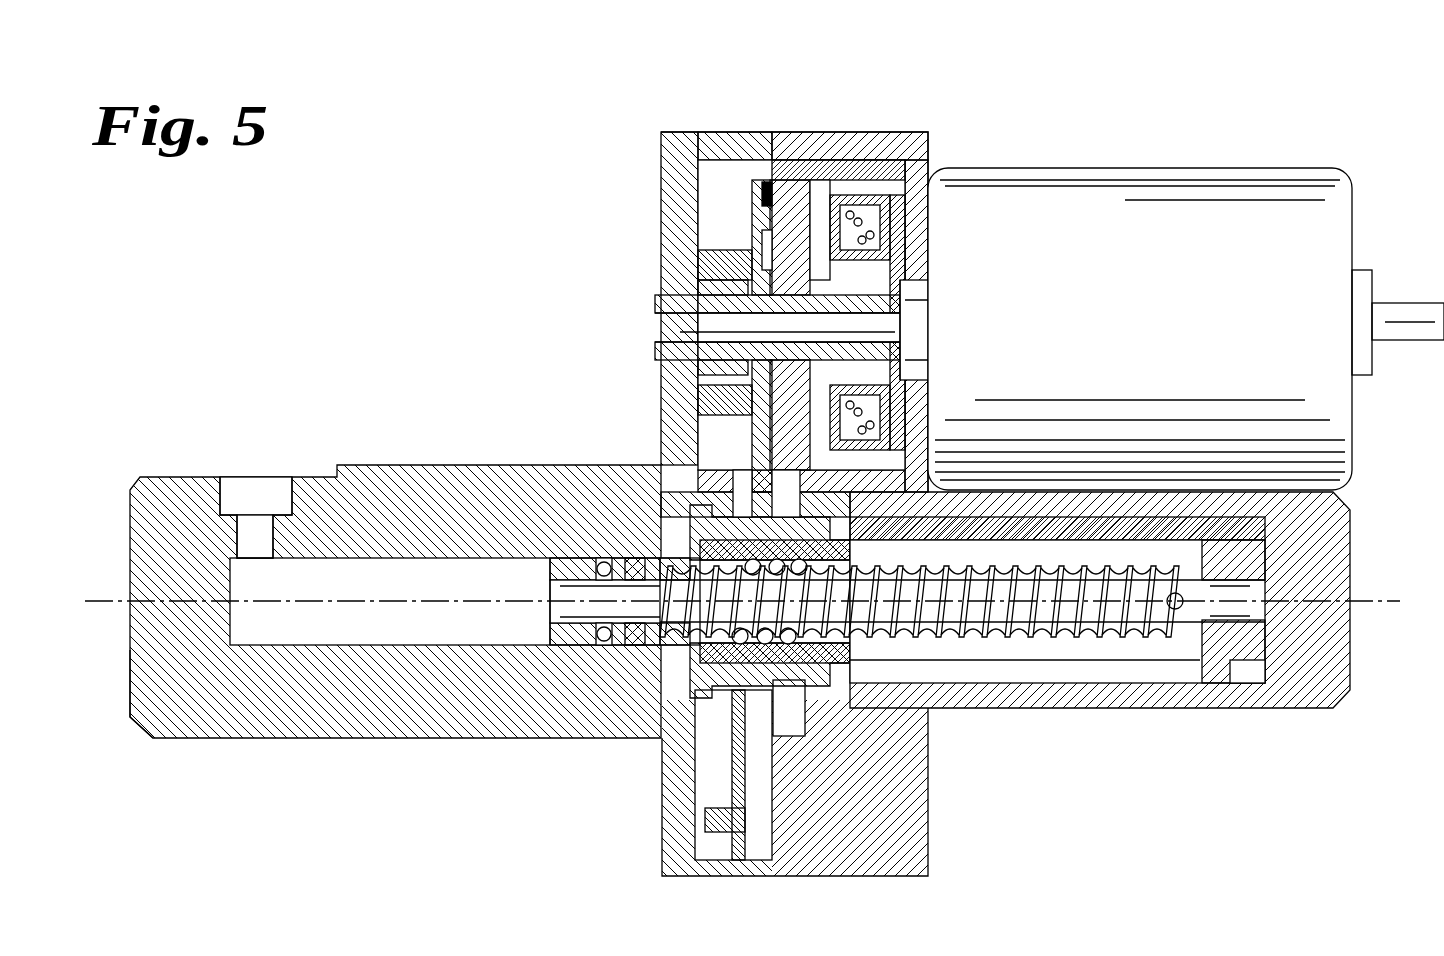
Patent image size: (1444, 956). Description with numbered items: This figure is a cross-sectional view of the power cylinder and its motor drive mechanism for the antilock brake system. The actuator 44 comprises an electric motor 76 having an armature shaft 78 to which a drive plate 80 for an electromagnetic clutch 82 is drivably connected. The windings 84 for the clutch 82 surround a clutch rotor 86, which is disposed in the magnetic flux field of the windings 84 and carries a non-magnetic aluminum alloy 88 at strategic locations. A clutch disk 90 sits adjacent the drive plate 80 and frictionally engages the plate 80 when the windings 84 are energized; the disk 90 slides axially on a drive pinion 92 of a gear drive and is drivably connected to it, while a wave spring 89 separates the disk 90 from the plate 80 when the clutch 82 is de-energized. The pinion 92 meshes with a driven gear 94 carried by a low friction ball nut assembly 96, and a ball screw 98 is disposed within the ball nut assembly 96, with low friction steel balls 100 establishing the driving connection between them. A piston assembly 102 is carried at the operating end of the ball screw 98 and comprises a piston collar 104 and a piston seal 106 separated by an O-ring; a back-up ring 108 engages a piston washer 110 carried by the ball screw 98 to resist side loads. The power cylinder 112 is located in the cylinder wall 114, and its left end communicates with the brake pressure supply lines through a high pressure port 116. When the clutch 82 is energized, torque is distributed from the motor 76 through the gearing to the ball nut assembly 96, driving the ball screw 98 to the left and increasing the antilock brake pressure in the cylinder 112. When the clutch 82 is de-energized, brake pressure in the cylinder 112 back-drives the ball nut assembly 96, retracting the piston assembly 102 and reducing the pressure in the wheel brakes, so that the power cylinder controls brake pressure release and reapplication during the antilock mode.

The actuator 44 is at (1318, 712).
The electric motor 76 is at (1068, 200).
The armature shaft 78 is at (875, 322).
The drive plate 80 is at (800, 190).
The electromagnetic clutch 82 is at (762, 182).
The windings 84 is at (858, 215).
The clutch rotor 86 is at (758, 238).
The non-magnetic aluminum alloy 88 is at (755, 415).
The wave spring 89 is at (745, 272).
The clutch disk 90 is at (752, 262).
The drive pinion 92 is at (705, 345).
The driven gear 94 is at (730, 500).
The ball nut assembly 96 is at (770, 646).
The ball screw 98 is at (1080, 610).
The steel balls 100 is at (745, 662).
The piston assembly 102 is at (556, 648).
The piston collar 104 is at (522, 566).
The piston seal 106 is at (600, 562).
The back-up ring 108 is at (640, 556).
The piston washer 110 is at (672, 556).
The power cylinder 112 is at (388, 636).
The cylinder wall 114 is at (232, 738).
The high pressure port 116 is at (248, 488).